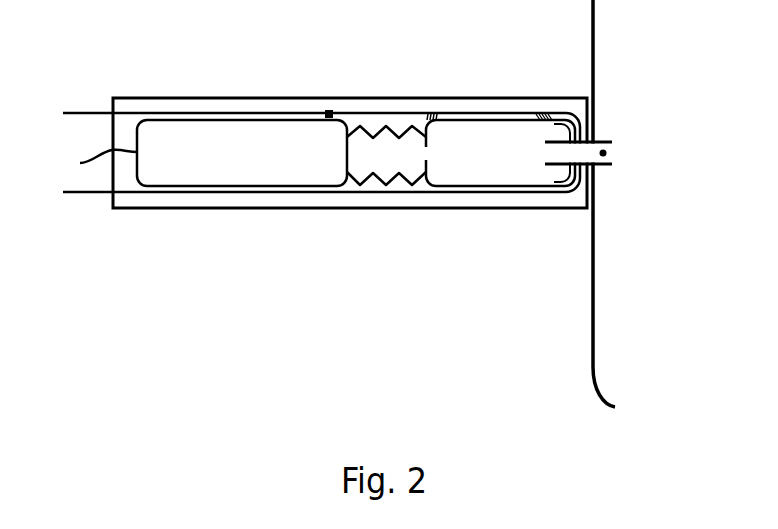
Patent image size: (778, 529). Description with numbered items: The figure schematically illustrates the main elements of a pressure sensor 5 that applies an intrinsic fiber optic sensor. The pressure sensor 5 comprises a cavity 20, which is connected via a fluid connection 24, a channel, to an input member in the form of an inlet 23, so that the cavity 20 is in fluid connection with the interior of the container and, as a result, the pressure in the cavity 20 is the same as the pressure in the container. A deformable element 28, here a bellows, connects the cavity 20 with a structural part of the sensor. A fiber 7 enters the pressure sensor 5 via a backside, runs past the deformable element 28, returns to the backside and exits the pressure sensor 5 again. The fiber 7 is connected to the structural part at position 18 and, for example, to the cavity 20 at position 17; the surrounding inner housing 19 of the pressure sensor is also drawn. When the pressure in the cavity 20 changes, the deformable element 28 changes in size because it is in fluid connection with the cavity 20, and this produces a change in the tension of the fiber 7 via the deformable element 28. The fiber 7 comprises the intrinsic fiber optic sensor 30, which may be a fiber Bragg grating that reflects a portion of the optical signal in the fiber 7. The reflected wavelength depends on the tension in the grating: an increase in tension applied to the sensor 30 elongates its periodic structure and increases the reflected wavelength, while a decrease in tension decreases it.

The pressure sensor 5 is at (235, 97).
The fiber 7 is at (87, 112).
The position 17 is at (538, 111).
The position 18 is at (328, 111).
The inner housing 19 is at (473, 98).
The cavity 20 is at (485, 186).
The inlet 23 is at (604, 140).
The fluid connection 24 is at (607, 153).
The deformable element 28 is at (383, 185).
The intrinsic fiber optic sensor 30 is at (427, 111).